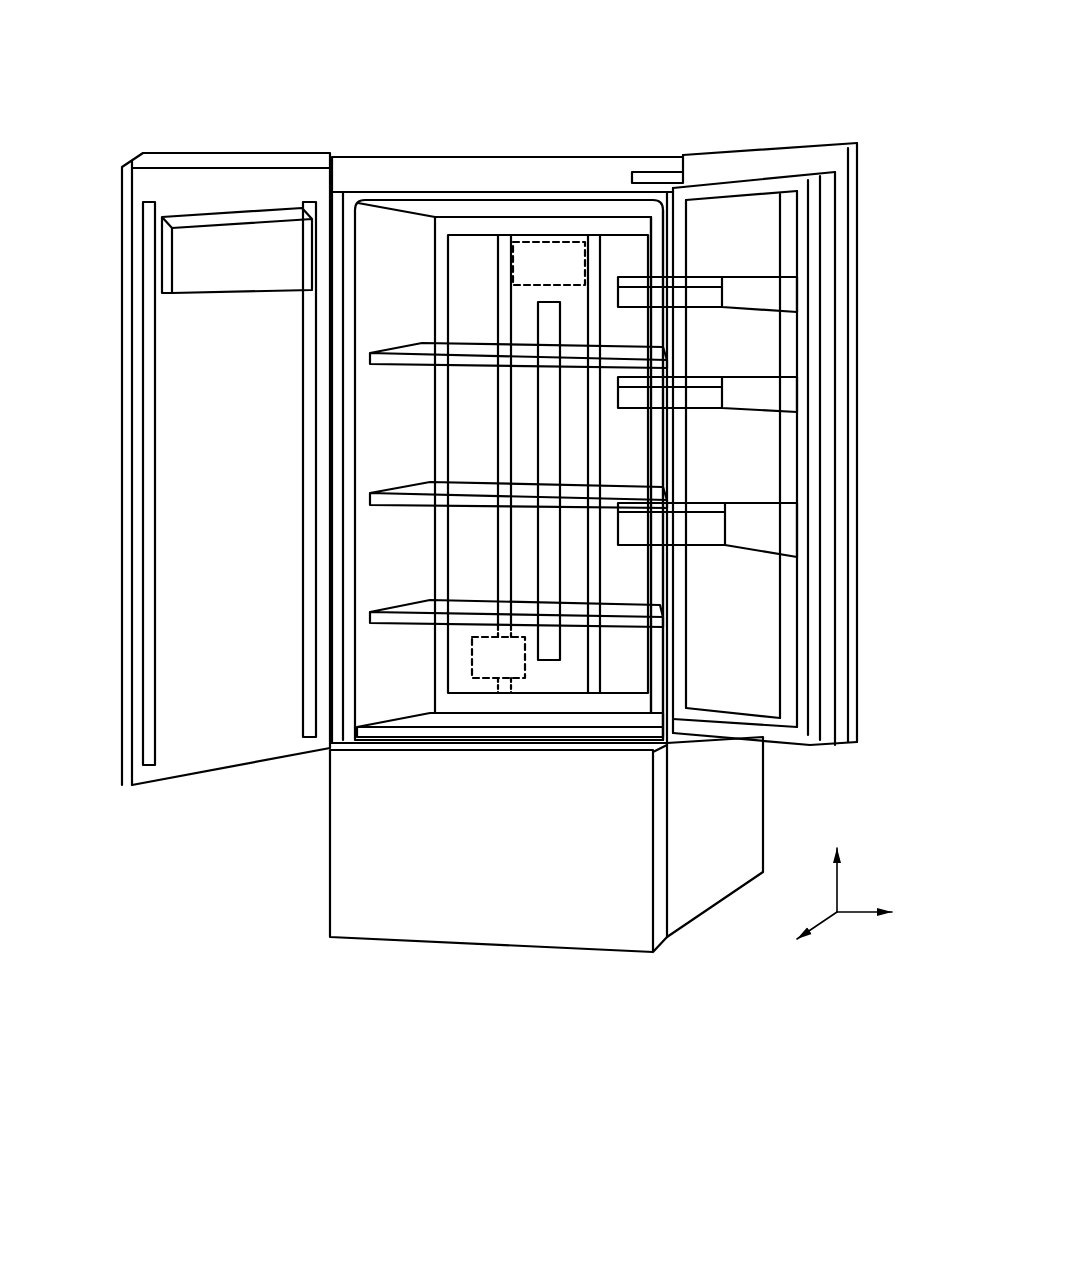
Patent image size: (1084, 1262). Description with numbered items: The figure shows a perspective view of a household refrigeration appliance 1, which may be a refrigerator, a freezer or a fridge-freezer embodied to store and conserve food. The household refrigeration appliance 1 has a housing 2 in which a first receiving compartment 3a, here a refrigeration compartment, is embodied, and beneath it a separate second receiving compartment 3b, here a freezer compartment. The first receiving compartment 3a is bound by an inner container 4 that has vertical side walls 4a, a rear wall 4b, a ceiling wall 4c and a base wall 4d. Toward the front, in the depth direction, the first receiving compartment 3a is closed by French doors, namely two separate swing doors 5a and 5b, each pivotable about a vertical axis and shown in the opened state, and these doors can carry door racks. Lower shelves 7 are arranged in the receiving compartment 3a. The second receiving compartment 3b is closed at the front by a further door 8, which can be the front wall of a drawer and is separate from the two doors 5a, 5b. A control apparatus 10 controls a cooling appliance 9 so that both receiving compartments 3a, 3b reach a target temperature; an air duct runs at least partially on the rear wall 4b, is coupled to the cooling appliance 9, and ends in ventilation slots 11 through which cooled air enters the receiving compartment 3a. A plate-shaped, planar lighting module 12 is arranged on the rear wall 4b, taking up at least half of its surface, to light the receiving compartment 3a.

The household refrigeration appliance 1 is at (430, 124).
The housing 2 is at (633, 145).
The first receiving compartment 3a is at (376, 443).
The second receiving compartment 3b is at (398, 813).
The inner container 4 is at (433, 393).
The vertical side walls 4a is at (667, 240).
The rear wall 4b is at (478, 225).
The ceiling wall 4c is at (510, 190).
The base wall 4d is at (470, 723).
The door 5a is at (857, 580).
The door 5b is at (227, 152).
The lower shelves 7 is at (433, 717).
The further door 8 is at (392, 910).
The cooling appliance 9 is at (490, 669).
The control apparatus 10 is at (537, 276).
The ventilation slots 11 is at (508, 285).
The lighting module 12 is at (548, 706).